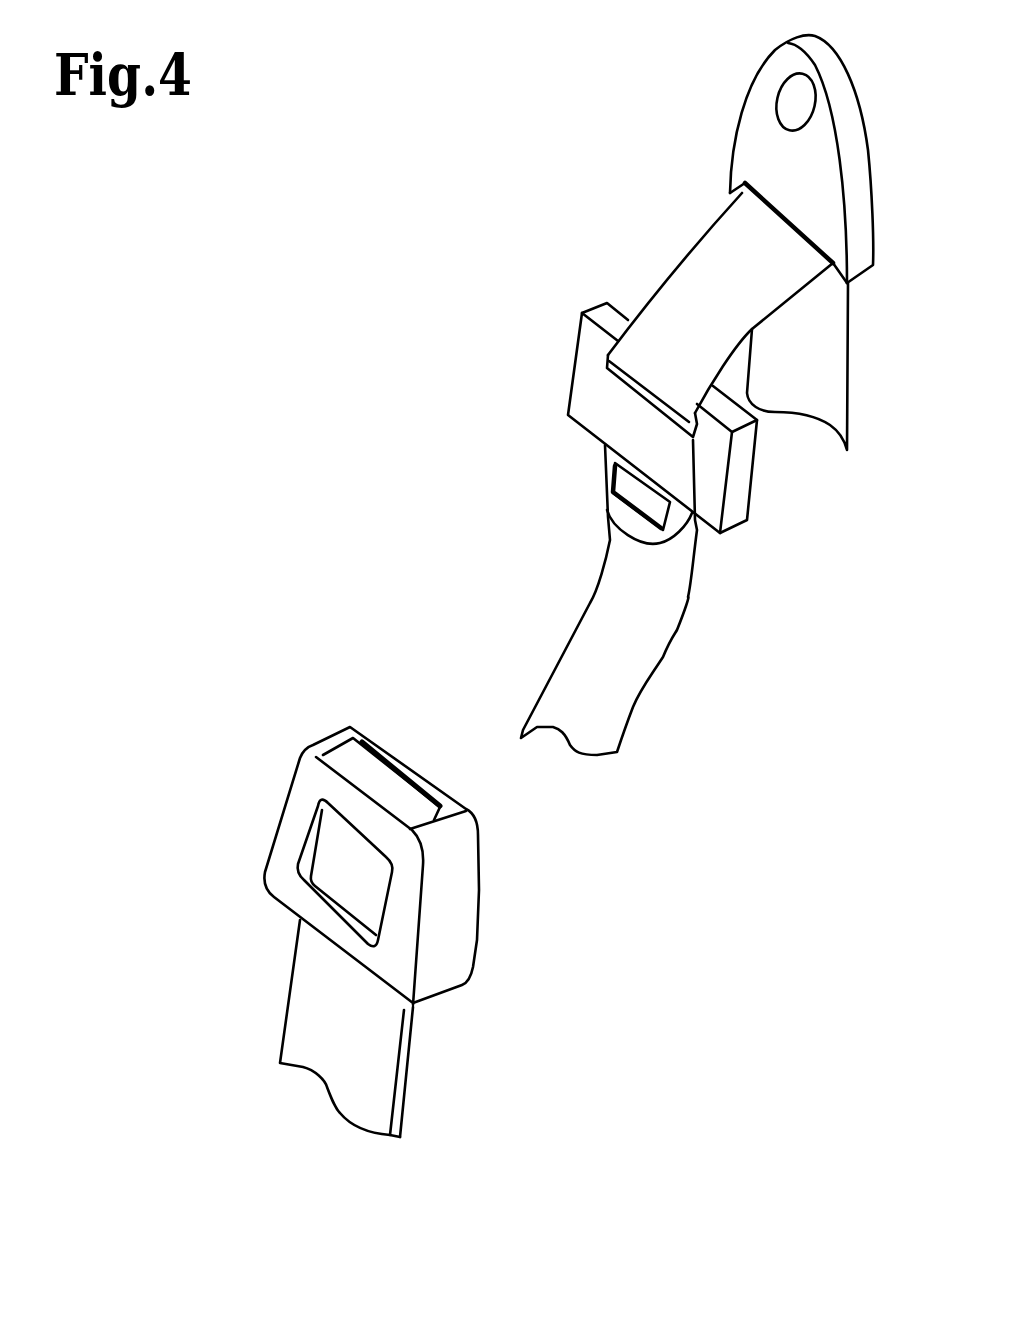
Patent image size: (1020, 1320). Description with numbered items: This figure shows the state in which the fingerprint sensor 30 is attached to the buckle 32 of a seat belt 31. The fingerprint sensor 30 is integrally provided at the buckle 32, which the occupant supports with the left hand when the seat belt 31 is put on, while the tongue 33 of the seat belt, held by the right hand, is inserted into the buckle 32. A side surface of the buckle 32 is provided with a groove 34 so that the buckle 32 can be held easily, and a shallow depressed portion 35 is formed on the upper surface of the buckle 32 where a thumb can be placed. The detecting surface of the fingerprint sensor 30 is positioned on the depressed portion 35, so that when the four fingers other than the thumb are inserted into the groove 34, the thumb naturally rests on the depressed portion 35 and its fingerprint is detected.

The fingerprint sensor 30 is at (234, 620).
The seat belt 31 is at (697, 267).
The buckle 32 is at (343, 723).
The tongue 33 is at (585, 390).
The groove 34 is at (337, 848).
The depressed portion 35 is at (390, 787).